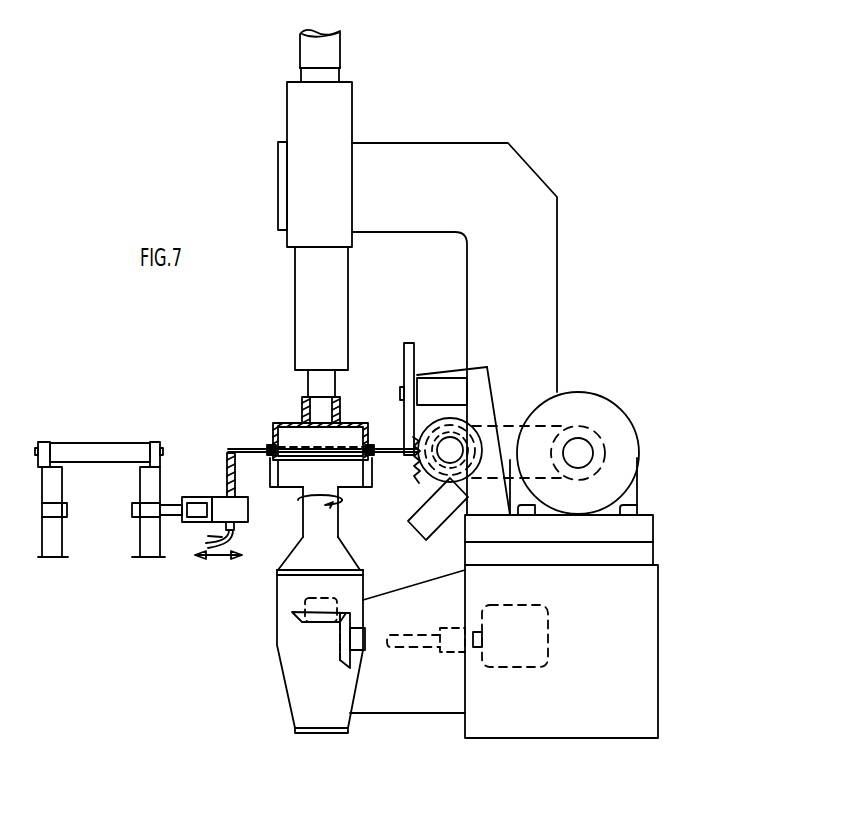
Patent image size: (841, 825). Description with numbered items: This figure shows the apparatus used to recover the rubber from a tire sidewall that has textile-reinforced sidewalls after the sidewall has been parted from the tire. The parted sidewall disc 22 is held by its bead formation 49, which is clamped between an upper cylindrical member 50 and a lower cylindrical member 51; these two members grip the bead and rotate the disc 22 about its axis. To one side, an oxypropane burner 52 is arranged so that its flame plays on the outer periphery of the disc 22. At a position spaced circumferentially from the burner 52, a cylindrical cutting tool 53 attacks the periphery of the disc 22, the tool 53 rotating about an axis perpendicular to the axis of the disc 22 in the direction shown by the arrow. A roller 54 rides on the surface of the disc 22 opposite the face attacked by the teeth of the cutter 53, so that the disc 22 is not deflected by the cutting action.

The sidewall disc 22 is at (229, 449).
The bead formation 49 is at (274, 446).
The upper cylindrical member 50 is at (373, 476).
The lower cylindrical member 51 is at (345, 413).
The oxypropane burner 52 is at (230, 490).
The cylindrical cutting tool 53 is at (418, 478).
The roller 54 is at (410, 345).